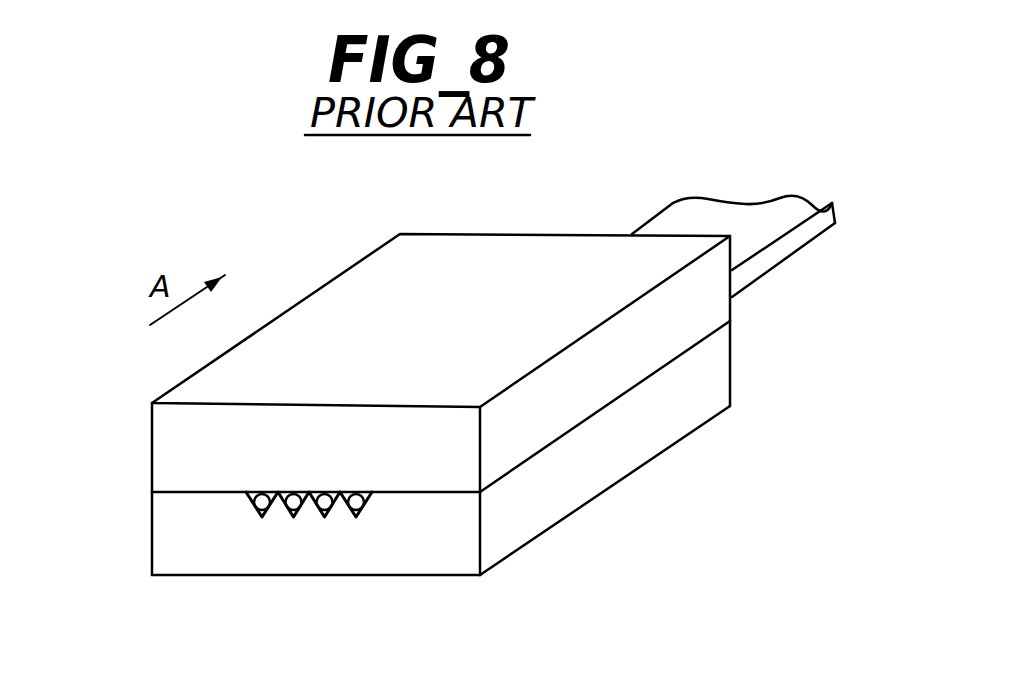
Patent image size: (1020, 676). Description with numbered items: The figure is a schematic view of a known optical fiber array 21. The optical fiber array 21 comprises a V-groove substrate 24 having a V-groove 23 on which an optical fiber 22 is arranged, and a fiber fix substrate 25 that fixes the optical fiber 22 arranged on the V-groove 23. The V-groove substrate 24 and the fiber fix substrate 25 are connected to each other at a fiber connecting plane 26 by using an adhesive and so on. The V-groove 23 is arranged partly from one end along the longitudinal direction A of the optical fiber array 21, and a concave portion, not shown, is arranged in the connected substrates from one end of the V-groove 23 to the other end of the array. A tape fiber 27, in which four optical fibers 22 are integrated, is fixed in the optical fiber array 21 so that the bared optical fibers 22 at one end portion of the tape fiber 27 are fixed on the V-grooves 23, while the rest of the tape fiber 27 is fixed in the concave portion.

The optical fiber array 21 is at (458, 420).
The optical fiber 22 is at (258, 512).
The V-groove 23 is at (302, 510).
The V-groove substrate 24 is at (428, 548).
The fiber fix substrate 25 is at (348, 282).
The fiber connecting plane 26 is at (183, 490).
The tape fiber 27 is at (670, 218).